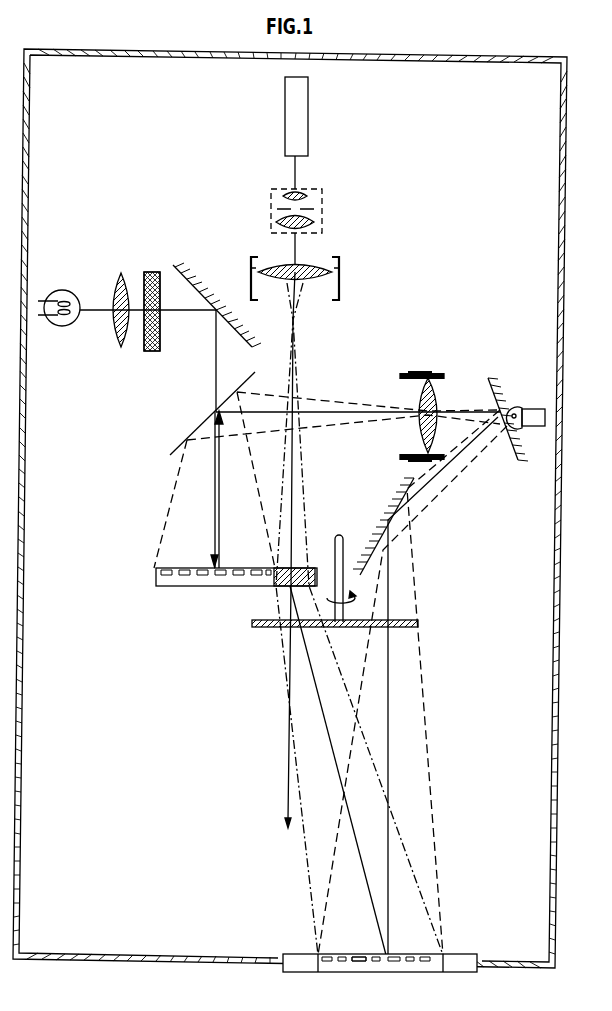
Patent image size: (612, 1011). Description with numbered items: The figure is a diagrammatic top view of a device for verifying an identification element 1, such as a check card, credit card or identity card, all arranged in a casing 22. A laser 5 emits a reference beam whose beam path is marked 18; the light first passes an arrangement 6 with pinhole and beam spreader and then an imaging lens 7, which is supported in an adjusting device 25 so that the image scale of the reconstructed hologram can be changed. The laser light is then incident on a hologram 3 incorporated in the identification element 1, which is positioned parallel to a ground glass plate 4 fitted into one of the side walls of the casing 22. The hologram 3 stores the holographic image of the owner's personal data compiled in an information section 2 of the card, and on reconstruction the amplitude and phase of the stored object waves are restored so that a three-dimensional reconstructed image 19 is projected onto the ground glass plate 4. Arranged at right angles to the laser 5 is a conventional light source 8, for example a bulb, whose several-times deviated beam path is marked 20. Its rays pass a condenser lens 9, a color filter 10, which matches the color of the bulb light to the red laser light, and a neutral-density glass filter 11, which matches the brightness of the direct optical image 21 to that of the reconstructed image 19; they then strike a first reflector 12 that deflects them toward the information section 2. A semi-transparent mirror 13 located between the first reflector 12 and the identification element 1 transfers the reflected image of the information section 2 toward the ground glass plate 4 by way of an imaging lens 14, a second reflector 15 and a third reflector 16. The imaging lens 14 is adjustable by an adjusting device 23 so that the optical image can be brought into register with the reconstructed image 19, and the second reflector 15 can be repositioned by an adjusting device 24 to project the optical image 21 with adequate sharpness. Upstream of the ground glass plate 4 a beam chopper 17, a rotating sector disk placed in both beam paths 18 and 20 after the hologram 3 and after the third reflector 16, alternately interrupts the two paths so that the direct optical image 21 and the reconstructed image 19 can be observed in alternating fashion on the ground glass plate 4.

The identification element 1 is at (170, 578).
The information section 2 is at (182, 570).
The hologram 3 is at (277, 585).
The ground glass plate 4 is at (300, 962).
The laser 5 is at (300, 130).
The arrangement with pinhole and beam spreader 6 is at (322, 204).
The imaging lens 7 is at (304, 281).
The light source 8 is at (65, 327).
The condenser lens 9 is at (117, 335).
The color filter 10 is at (140, 275).
The neutral-density glass filter 11 is at (155, 272).
The first reflector 12 is at (205, 285).
The semi-transparent mirror 13 is at (200, 430).
The imaging lens 14 is at (434, 378).
The second reflector 15 is at (498, 382).
The third reflector 16 is at (395, 505).
The beam chopper 17 is at (395, 628).
The beam path of the laser 18 is at (305, 525).
The reconstructed image 19 is at (352, 969).
The beam path of the light source 20 is at (265, 517).
The direct optical image 21 is at (353, 956).
The casing 22 is at (557, 760).
The adjusting device 23 is at (420, 373).
The adjusting device 24 is at (532, 408).
The adjusting device 25 is at (339, 297).